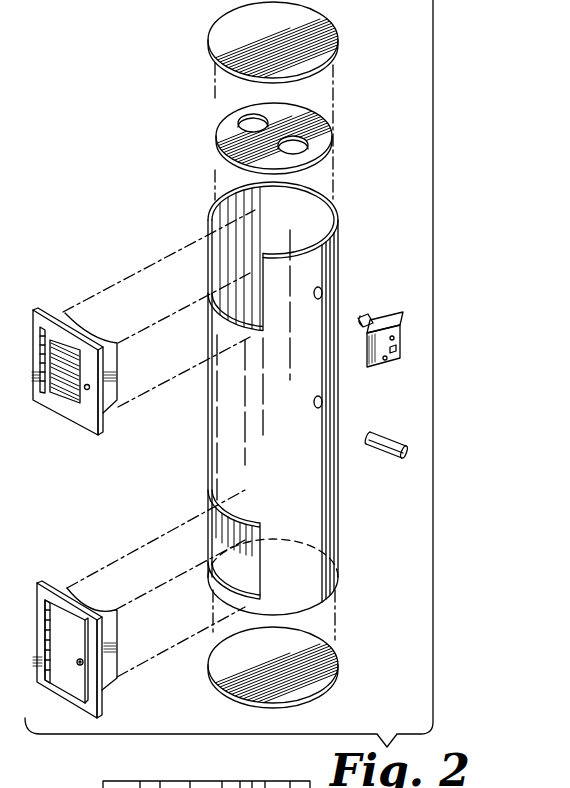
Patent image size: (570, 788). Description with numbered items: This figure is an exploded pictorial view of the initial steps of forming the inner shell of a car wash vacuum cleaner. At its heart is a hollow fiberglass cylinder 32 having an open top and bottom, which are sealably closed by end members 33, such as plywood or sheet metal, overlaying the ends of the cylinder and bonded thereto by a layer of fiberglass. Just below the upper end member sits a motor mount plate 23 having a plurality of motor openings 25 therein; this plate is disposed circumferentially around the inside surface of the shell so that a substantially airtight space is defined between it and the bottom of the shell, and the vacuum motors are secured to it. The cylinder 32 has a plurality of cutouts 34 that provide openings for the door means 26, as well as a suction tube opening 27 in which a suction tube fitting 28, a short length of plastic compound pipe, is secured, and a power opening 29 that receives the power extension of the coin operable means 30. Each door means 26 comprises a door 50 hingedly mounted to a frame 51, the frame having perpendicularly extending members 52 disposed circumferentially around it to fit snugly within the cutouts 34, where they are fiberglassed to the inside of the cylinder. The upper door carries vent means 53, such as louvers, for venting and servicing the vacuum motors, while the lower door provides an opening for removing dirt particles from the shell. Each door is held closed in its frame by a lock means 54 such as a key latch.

The motor mount plate 23 is at (279, 143).
The motor openings 25 is at (293, 145).
The door means 26 is at (89, 493).
The suction tube opening 27 is at (323, 402).
The suction tube fitting 28 is at (385, 441).
The power opening 29 is at (323, 292).
The coin operable means 30 is at (393, 317).
The fiberglass cylinder 32 is at (278, 398).
The end members 33 is at (323, 39).
The cutouts 34 is at (222, 250).
The door 50 is at (85, 413).
The frame 51 is at (92, 438).
The perpendicularly extending members 52 is at (72, 326).
The vent means 53 is at (68, 390).
The lock means 54 is at (90, 388).